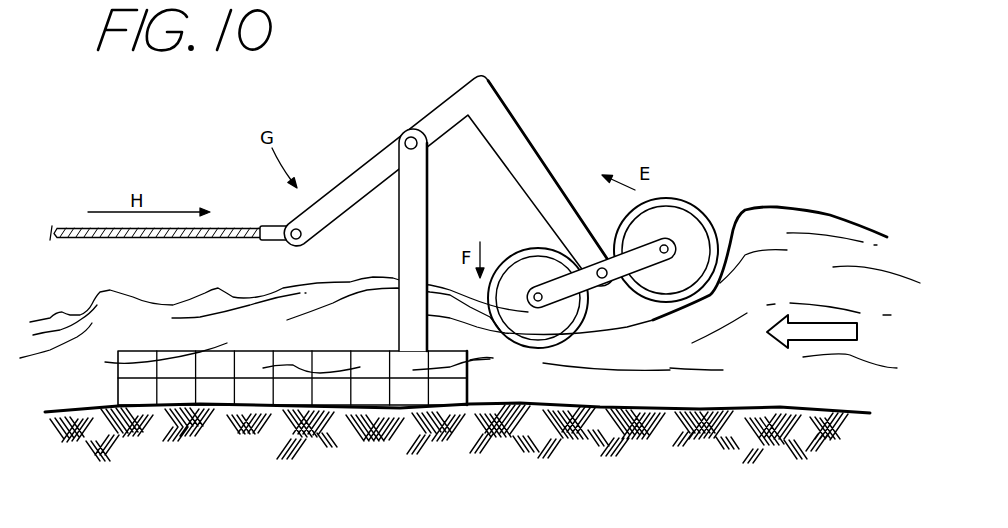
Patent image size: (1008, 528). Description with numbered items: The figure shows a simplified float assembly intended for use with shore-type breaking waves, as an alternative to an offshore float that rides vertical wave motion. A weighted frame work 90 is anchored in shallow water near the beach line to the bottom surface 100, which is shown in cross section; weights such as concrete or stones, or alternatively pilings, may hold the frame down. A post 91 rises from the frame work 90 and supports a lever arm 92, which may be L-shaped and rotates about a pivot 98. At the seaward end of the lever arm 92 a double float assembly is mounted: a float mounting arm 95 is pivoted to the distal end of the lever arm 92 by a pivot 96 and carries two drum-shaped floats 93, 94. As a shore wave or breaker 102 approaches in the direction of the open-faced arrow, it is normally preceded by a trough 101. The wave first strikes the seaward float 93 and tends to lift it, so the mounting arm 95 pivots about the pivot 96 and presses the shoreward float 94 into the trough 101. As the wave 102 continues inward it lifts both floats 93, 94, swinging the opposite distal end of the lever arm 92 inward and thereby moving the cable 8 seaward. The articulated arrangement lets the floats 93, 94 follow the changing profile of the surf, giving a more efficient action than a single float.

The cable 8 is at (80, 228).
The weighted frame work 90 is at (118, 392).
The post 91 is at (422, 207).
The lever arm 92 is at (532, 148).
The float 93 is at (695, 212).
The float 94 is at (537, 263).
The float mounting arm 95 is at (650, 267).
The pivot 96 is at (593, 286).
The pivot 98 is at (403, 139).
The bottom surface 100 is at (355, 435).
The trough 101 is at (517, 385).
The wave 102 is at (777, 220).